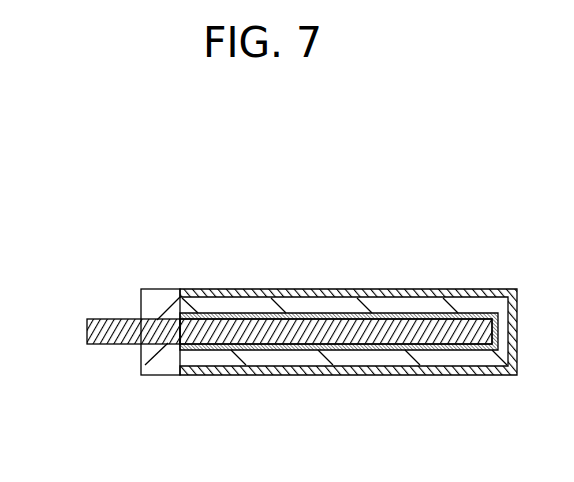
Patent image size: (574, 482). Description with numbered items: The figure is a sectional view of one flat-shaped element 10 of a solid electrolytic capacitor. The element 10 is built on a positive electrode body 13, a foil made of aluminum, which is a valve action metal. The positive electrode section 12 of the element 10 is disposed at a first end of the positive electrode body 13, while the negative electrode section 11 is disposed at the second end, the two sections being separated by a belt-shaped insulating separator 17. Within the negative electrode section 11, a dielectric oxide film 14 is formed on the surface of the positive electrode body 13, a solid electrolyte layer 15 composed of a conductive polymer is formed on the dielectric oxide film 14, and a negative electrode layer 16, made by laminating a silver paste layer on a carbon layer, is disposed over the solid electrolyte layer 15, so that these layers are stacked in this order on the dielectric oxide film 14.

The element 10 is at (100, 213).
The negative electrode section 11 is at (515, 378).
The positive electrode section 12 is at (137, 383).
The positive electrode body 13 is at (313, 315).
The dielectric oxide film 14 is at (289, 313).
The solid electrolyte layer 15 is at (390, 310).
The negative electrode layer 16 is at (505, 289).
The insulating separator 17 is at (158, 308).